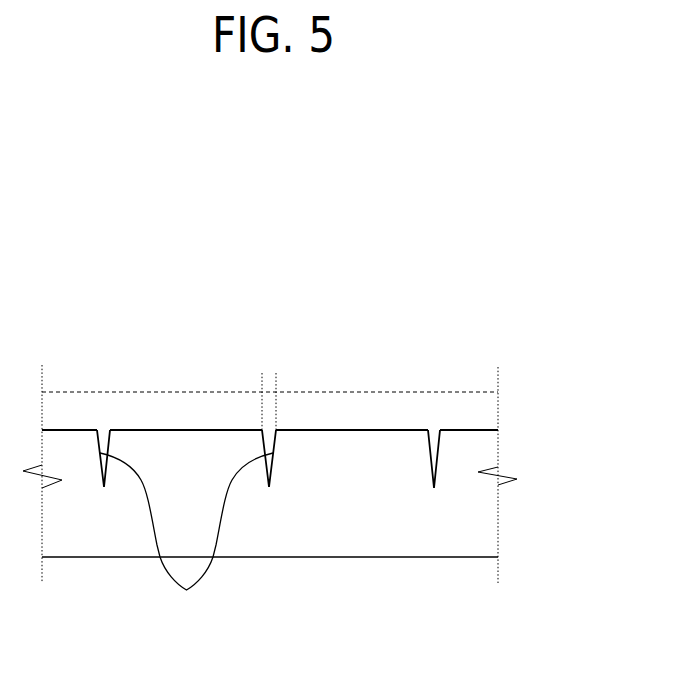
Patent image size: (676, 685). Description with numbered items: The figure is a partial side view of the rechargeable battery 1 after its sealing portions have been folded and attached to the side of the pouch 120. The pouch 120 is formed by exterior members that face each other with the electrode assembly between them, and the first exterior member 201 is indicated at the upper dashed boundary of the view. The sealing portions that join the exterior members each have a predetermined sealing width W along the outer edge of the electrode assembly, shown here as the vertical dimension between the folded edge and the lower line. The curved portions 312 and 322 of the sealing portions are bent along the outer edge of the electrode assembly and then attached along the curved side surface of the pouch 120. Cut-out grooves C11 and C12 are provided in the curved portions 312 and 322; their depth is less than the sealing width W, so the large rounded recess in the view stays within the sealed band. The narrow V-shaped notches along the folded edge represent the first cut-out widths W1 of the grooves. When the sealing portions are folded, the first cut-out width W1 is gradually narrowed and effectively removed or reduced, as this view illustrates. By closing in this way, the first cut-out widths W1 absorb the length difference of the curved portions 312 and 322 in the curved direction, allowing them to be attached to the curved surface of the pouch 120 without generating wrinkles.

The rechargeable battery 1 is at (225, 299).
The pouch 120 is at (270, 366).
The first exterior member 201 is at (382, 410).
The curved portion 322 is at (270, 581).
The curved portion 312 is at (415, 537).
The cut-out groove C11 is at (186, 539).
The cut-out groove C12 is at (186, 539).
The sealing width W is at (358, 430).
The first cut-out width W1 is at (306, 380).